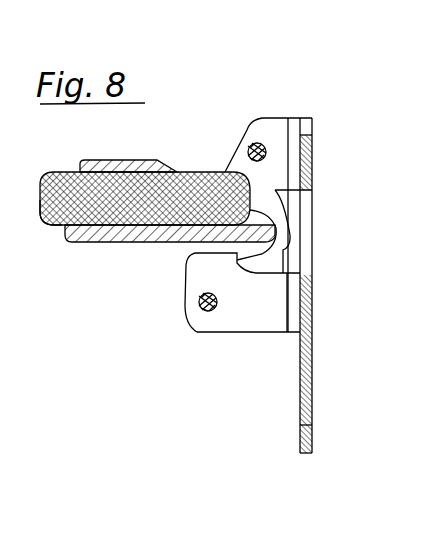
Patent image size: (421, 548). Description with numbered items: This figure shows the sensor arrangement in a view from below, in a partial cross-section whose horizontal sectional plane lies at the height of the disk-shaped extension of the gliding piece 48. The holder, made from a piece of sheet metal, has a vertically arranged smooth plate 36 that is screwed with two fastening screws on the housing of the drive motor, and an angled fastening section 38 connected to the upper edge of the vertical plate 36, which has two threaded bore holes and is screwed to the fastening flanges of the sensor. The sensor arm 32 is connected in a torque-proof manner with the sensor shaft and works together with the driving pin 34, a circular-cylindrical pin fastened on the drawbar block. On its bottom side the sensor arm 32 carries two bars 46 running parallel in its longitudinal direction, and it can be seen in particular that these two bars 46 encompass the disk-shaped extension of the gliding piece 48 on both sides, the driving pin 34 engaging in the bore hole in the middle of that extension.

The sensor arm 32 is at (184, 240).
The driving pin 34 is at (137, 232).
The vertical plate 36 is at (311, 352).
The fastening section 38 is at (275, 130).
The bars 46 is at (141, 165).
The gliding piece 48 is at (52, 222).